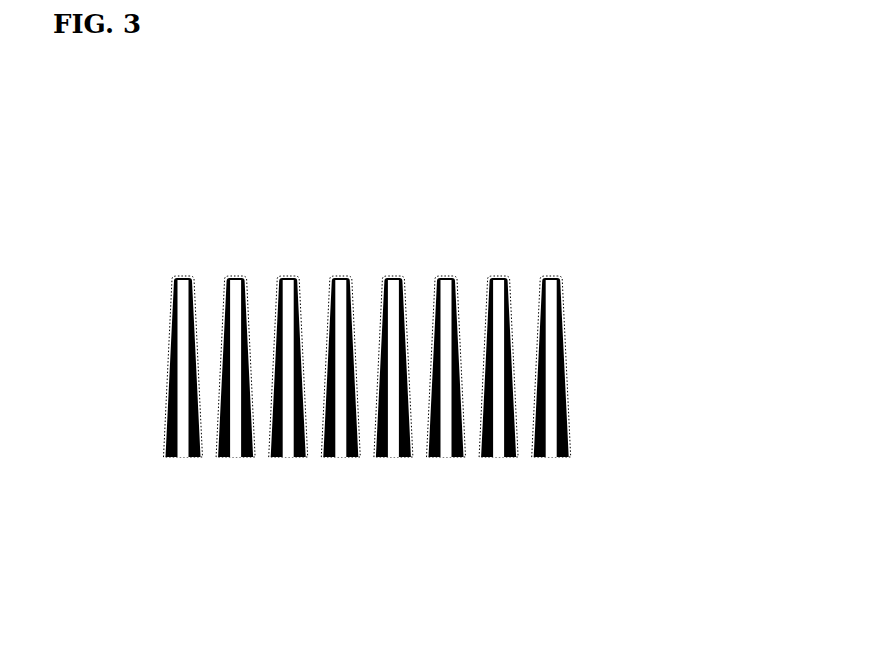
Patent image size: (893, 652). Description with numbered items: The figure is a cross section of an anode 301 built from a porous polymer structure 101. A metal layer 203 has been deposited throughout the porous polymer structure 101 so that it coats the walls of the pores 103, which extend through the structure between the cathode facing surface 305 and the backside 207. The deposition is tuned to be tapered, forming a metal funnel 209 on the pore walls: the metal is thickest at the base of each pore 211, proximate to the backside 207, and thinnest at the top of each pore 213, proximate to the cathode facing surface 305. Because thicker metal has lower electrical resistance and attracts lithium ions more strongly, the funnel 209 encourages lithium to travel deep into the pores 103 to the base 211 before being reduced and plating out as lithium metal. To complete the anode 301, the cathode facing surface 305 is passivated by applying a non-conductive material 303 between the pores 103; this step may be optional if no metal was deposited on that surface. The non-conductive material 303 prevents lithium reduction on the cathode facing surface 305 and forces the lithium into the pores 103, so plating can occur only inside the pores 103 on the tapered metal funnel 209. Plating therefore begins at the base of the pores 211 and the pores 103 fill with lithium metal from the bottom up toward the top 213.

The porous polymer structure 101 is at (342, 295).
The pores 103 is at (423, 360).
The metal layer 203 is at (562, 282).
The backside 207 is at (178, 480).
The funnel 209 is at (197, 343).
The base of each pore 211 is at (472, 447).
The top of each pore 213 is at (472, 297).
The anode 301 is at (677, 200).
The non-conductive material 303 is at (287, 277).
The cathode facing surface 305 is at (172, 265).